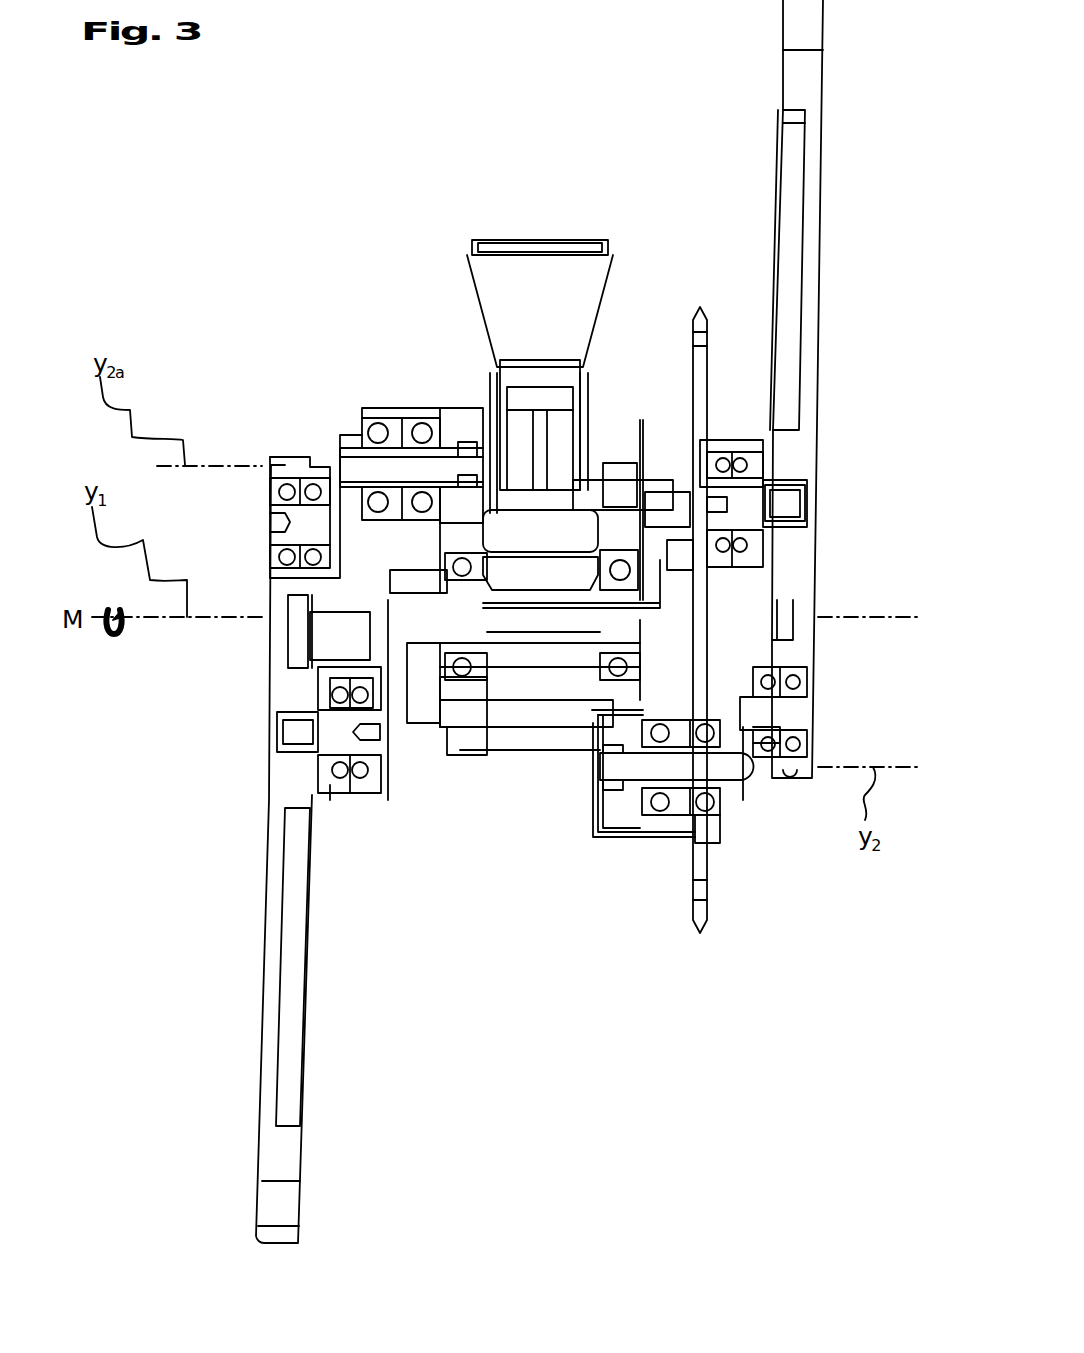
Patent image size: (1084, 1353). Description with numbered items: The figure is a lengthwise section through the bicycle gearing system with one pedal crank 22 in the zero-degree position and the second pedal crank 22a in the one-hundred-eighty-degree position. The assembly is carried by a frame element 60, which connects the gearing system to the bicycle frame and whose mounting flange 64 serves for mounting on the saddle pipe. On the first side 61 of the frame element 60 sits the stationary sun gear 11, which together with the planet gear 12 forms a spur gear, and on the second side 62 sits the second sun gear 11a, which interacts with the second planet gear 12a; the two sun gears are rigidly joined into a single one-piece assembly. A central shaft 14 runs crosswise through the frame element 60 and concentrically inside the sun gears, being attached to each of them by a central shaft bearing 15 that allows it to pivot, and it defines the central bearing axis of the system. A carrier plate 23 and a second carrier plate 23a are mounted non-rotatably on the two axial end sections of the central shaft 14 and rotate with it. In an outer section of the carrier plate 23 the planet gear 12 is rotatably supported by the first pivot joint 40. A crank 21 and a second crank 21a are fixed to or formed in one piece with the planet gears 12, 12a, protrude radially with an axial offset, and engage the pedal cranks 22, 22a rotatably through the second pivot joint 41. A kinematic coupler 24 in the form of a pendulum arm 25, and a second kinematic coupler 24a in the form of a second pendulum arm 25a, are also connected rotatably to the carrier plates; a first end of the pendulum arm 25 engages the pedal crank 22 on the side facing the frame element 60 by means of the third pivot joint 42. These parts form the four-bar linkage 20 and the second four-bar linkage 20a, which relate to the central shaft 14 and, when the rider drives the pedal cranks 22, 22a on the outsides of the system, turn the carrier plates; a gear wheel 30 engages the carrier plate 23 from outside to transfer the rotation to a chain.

The stationary sun gear 11 is at (585, 740).
The second sun gear 11a is at (450, 745).
The planet gear 12 is at (623, 818).
The second planet gear 12a is at (480, 445).
The central shaft 14 is at (565, 631).
The central shaft bearing 15 is at (560, 740).
The four-bar linkage 20 is at (828, 560).
The second four-bar linkage 20a is at (255, 692).
The crank 21 is at (782, 650).
The second crank 21a is at (260, 583).
The pedal crank 22 is at (815, 250).
The second pedal crank 22a is at (262, 1050).
The carrier plate 23 is at (707, 685).
The second carrier plate 23a is at (400, 535).
The kinematic coupler 24 is at (720, 582).
The pendulum arm 25 is at (727, 445).
The second kinematic coupler 24a is at (382, 869).
The second pendulum arm 25a is at (335, 787).
The gear wheel 30 is at (652, 450).
The first pivot joint 40 is at (360, 450).
The second pivot joint 41 is at (283, 457).
The third pivot joint 42 is at (763, 463).
The frame element 60 is at (530, 307).
The first side 61 is at (655, 447).
The second side 62 is at (408, 400).
The mounting flange 64 is at (497, 240).